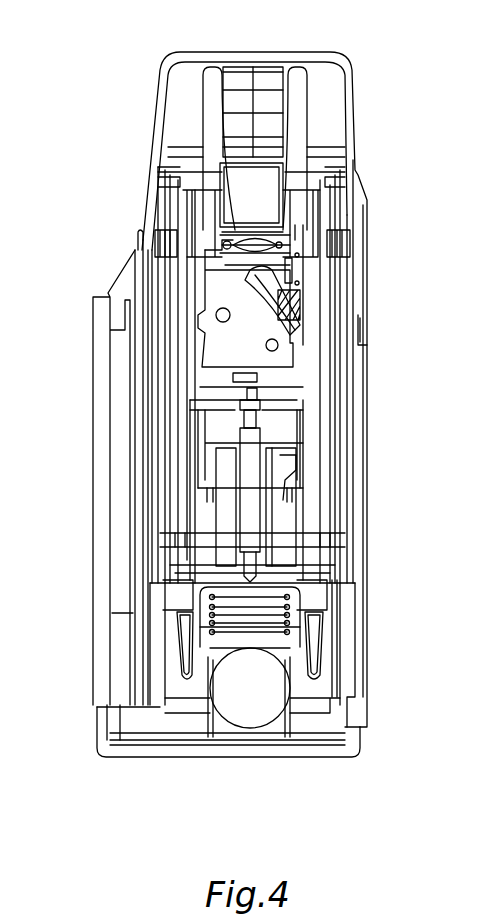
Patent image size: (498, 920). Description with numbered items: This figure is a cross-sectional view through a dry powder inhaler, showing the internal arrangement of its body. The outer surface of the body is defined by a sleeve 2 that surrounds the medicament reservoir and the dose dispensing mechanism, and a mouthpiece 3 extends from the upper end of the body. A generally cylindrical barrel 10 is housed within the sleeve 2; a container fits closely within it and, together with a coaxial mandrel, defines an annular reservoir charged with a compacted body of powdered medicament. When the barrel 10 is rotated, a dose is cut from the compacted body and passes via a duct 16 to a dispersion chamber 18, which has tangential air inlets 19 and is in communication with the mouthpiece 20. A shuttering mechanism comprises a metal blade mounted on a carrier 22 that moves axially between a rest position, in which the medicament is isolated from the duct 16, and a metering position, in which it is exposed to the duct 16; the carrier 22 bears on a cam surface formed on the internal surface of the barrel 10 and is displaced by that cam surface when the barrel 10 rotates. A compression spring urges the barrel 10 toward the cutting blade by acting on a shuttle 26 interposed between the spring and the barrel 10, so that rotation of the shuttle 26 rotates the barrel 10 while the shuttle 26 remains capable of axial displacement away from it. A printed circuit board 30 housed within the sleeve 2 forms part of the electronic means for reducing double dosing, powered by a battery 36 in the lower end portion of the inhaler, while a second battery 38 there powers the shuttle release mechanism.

The sleeve 2 is at (362, 417).
The mouthpiece 3 is at (263, 100).
The barrel 10 is at (350, 477).
The duct 16 is at (290, 305).
The dispersion chamber 18 is at (272, 253).
The tangential air inlets 19 is at (300, 235).
The mouthpiece 20 is at (303, 93).
The carrier 22 is at (210, 405).
The shuttle 26 is at (177, 640).
The printed circuit board 30 is at (122, 463).
The battery 36 is at (250, 745).
The second battery 38 is at (270, 688).